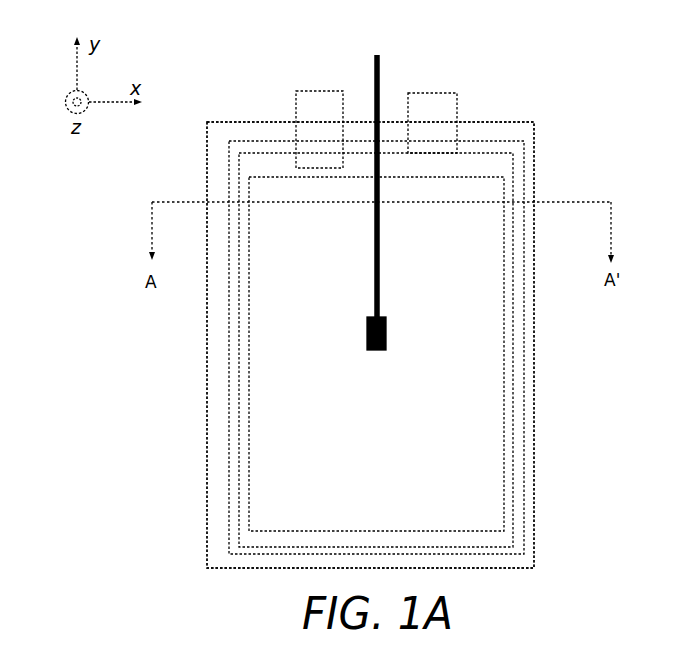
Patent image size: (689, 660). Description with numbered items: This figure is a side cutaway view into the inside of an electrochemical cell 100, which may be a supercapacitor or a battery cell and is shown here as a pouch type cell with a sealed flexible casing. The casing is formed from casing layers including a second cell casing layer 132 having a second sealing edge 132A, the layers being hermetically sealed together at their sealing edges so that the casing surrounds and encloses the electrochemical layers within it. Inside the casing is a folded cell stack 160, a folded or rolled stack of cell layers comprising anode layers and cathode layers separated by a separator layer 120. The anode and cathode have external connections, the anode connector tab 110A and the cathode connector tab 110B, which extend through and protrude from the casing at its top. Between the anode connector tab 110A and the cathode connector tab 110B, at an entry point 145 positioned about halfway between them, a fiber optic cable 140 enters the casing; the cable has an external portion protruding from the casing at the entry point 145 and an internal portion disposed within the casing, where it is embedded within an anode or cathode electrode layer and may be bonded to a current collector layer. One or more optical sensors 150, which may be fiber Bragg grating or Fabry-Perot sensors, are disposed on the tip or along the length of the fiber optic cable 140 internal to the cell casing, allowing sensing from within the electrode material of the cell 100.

The electrochemical cell 100 is at (517, 30).
The anode connector tab 110A is at (315, 102).
The cathode connector tab 110B is at (435, 102).
The separator layer 120 is at (513, 224).
The second cell casing layer 132 is at (537, 181).
The second sealing edge 132A is at (529, 134).
The fiber optic cable 140 is at (389, 255).
The entry point 145 is at (380, 122).
The optical sensor 150 is at (395, 345).
The folded cell stack 160 is at (267, 500).